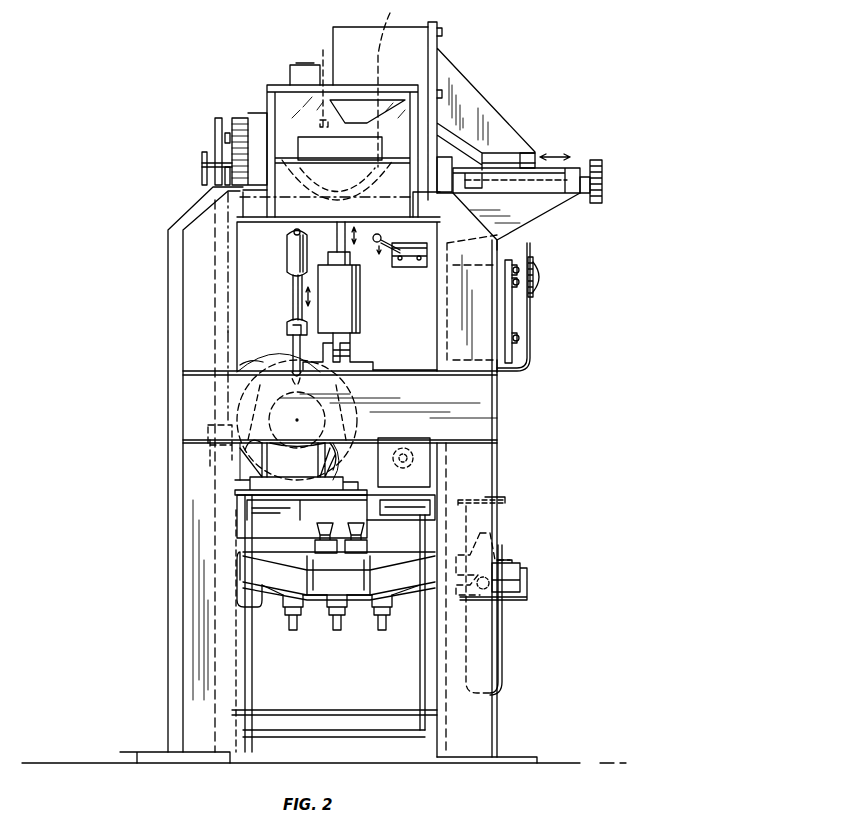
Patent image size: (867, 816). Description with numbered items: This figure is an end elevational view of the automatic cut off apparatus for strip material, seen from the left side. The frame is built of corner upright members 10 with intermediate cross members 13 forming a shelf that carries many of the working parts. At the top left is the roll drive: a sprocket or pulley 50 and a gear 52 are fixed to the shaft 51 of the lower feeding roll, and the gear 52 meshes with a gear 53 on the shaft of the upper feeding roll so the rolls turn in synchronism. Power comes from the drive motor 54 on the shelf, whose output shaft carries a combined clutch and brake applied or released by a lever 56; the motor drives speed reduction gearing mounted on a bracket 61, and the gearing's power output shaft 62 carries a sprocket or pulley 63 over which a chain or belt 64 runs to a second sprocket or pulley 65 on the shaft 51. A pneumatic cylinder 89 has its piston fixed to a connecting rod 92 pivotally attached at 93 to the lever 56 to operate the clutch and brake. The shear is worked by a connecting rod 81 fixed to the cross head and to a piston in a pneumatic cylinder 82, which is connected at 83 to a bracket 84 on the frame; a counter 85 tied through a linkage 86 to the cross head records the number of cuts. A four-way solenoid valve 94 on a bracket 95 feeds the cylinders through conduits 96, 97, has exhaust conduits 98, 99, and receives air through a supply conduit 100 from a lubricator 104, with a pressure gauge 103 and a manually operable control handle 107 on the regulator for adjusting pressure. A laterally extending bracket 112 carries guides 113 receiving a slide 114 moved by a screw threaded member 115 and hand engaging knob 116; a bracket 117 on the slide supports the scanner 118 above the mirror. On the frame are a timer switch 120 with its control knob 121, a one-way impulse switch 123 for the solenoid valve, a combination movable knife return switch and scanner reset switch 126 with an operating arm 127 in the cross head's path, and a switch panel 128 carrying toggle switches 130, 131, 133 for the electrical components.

The corner upright members 10 is at (492, 460).
The intermediate cross members 13 is at (435, 489).
The sprocket or pulley 50 is at (215, 150).
The shaft 51 is at (222, 208).
The gear 52 is at (204, 165).
The gear 53 is at (242, 118).
The drive motor 54 is at (265, 364).
The lever 56 is at (293, 350).
The bracket 61 is at (270, 478).
The power output shaft 62 is at (218, 470).
The sprocket or pulley 63 is at (215, 423).
The chain or belt 64 is at (236, 330).
The second sprocket or pulley 65 is at (204, 180).
The connecting rod 81 is at (338, 241).
The pneumatic cylinder 82 is at (355, 302).
The connection 83 is at (355, 356).
The bracket 84 is at (406, 370).
The counter 85 is at (300, 65).
The linkage 86 is at (323, 62).
The pneumatic cylinder 89 is at (287, 258).
The connecting rod 92 is at (293, 300).
The pivotal attachment 93 is at (287, 328).
The four-way solenoid valve 94 is at (293, 546).
The bracket 95 is at (367, 530).
The conduit 96 is at (292, 615).
The conduit 97 is at (385, 616).
The exhaust conduit 98 is at (318, 523).
The exhaust conduit 99 is at (352, 525).
The supply conduit 100 is at (337, 617).
The pressure gauge 103 is at (527, 590).
The lubricator 104 is at (503, 669).
The manually operable control handle 107 is at (500, 502).
The laterally extending bracket 112 is at (545, 210).
The guides 113 is at (568, 163).
The slide 114 is at (522, 165).
The screw threaded member 115 is at (588, 176).
The hand engaging knob 116 is at (602, 190).
The bracket 117 is at (478, 96).
The scanner 118 is at (384, 40).
The timer switch 120 is at (524, 364).
The control knob 121 is at (538, 279).
The switch 123 is at (422, 467).
The combination movable knife return switch and scanner reset switch 126 is at (413, 273).
The operating arm 127 is at (390, 242).
The switch panel 128 is at (510, 325).
The toggle switch 130 is at (518, 340).
The toggle switch 131 is at (518, 287).
The toggle switch 133 is at (518, 262).